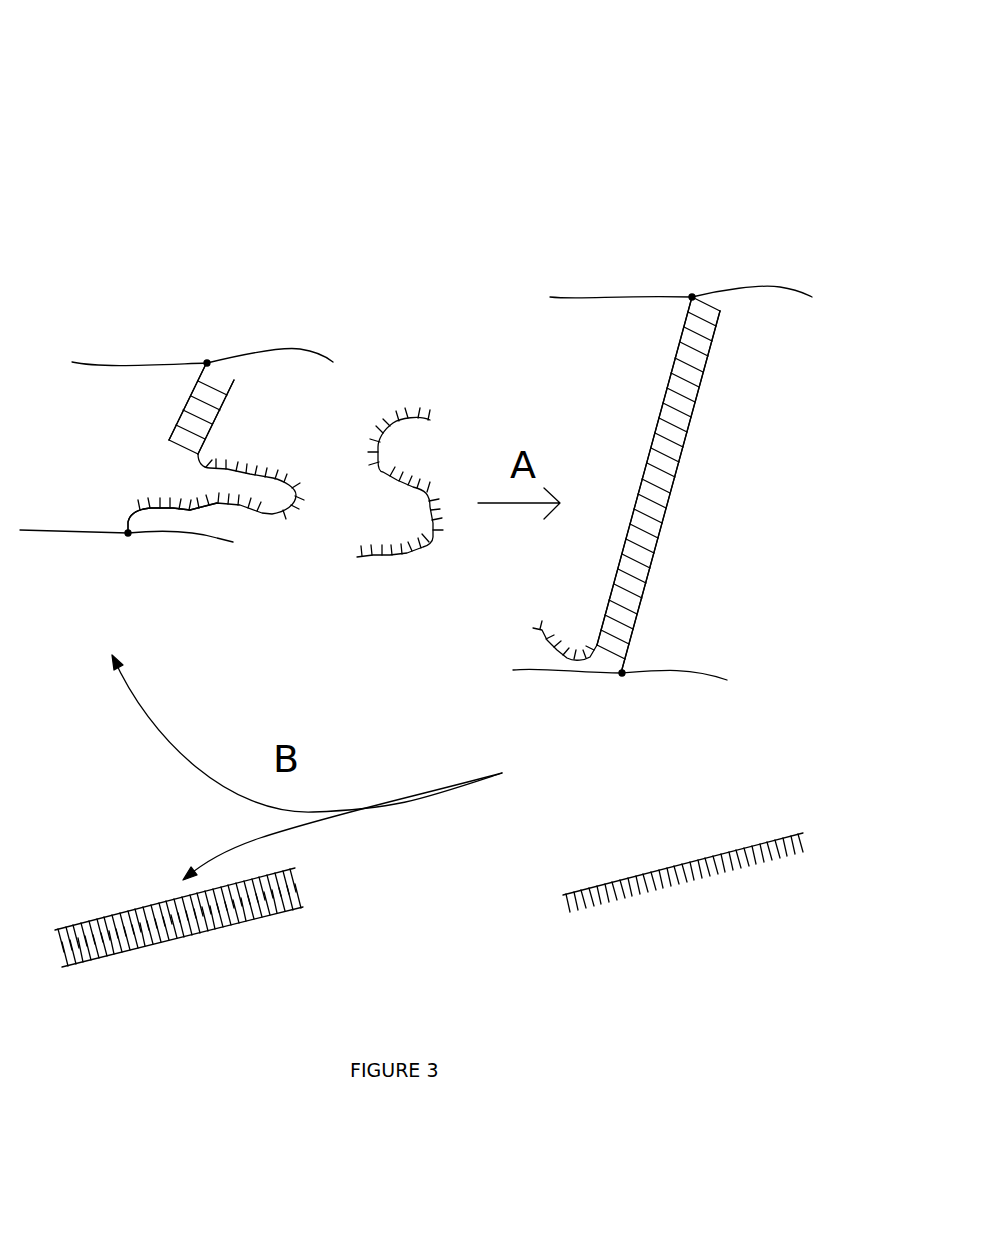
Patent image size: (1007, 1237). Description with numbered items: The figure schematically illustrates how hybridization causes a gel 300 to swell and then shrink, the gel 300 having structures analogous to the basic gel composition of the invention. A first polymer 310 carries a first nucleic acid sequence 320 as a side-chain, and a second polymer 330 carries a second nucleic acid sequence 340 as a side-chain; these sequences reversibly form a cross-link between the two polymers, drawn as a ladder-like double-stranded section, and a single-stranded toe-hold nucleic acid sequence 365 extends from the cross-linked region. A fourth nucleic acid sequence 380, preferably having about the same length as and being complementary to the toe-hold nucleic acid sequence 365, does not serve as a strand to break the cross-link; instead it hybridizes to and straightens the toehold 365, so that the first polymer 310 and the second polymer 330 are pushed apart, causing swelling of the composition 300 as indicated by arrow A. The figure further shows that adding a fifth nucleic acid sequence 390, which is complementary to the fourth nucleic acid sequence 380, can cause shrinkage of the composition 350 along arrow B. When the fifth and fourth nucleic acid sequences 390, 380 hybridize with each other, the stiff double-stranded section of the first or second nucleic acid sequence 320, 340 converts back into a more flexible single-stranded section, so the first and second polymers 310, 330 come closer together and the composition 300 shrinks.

The gel composition 300 is at (101, 113).
The first polymer 310 is at (87, 365).
The first nucleic acid sequence 320 is at (177, 417).
The second polymer 330 is at (105, 533).
The second nucleic acid sequence 340 is at (215, 423).
The composition 350 is at (213, 385).
The toe-hold nucleic acid sequence 365 is at (130, 508).
The fourth nucleic acid sequence 380 is at (358, 560).
The fifth nucleic acid sequence 390 is at (643, 873).